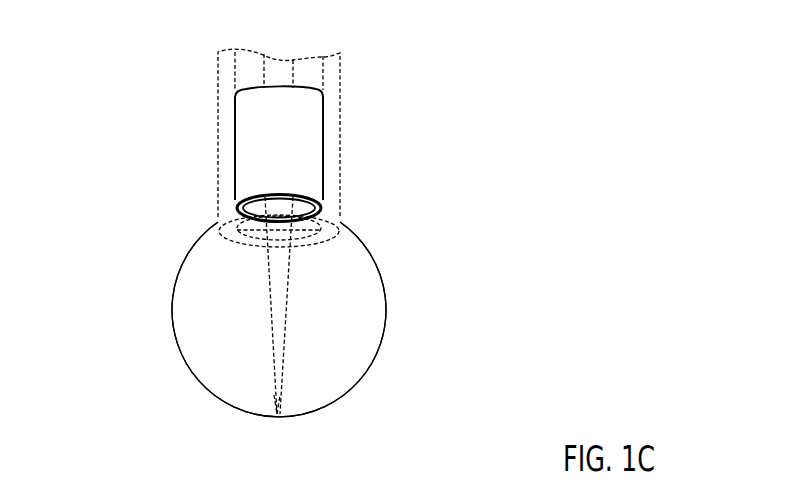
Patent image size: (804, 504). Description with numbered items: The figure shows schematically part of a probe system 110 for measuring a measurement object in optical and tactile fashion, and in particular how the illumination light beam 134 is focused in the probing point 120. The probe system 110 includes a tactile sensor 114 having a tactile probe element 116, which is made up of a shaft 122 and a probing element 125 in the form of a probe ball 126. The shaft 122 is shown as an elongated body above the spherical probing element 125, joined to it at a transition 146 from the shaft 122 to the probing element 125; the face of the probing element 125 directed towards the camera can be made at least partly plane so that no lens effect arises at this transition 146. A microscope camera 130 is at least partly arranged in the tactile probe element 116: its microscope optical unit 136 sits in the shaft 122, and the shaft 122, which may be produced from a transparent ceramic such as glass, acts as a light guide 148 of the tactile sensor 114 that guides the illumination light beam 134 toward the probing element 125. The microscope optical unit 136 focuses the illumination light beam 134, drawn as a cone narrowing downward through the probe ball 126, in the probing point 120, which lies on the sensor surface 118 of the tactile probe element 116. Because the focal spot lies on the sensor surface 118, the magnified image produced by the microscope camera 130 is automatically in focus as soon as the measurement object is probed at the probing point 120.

The probe system 110 is at (291, 231).
The tactile sensor 114 is at (162, 124).
The tactile probe element 116 is at (351, 235).
The sensor surface 118 is at (386, 320).
The probing point 120 is at (278, 414).
The shaft 122 is at (374, 133).
The probing element 125 is at (349, 321).
The probe ball 126 is at (342, 355).
The microscope camera 130 is at (356, 153).
The illumination light beam 134 is at (283, 287).
The microscope optical unit 136 is at (303, 155).
The transition 146 is at (230, 243).
The light guide 148 is at (332, 91).